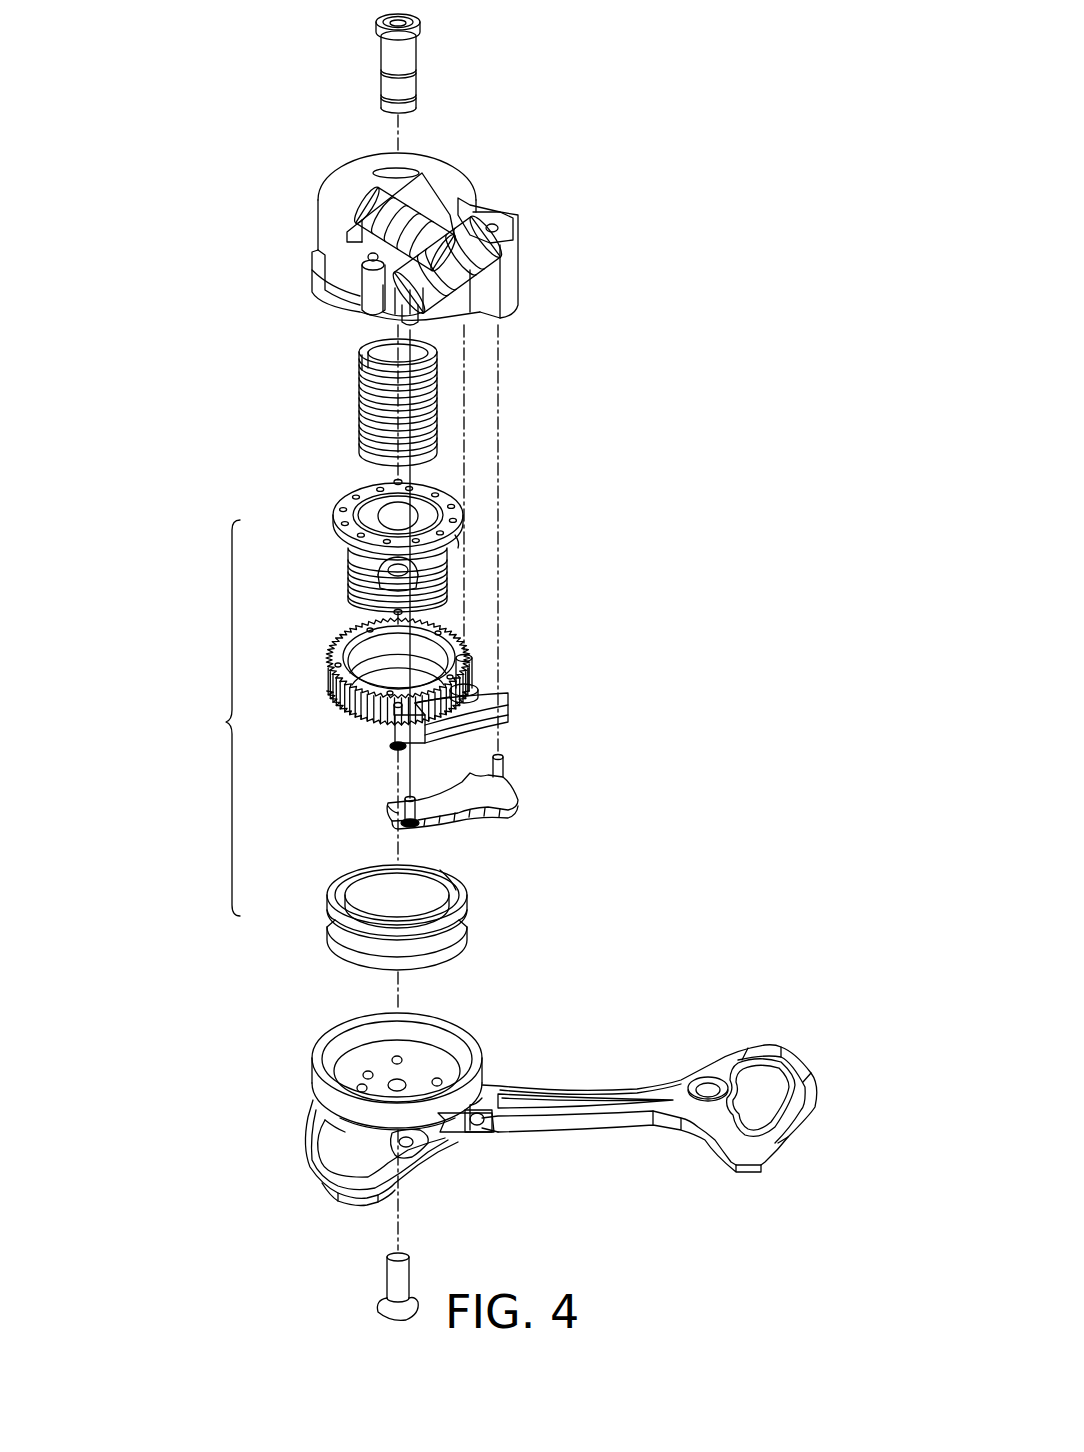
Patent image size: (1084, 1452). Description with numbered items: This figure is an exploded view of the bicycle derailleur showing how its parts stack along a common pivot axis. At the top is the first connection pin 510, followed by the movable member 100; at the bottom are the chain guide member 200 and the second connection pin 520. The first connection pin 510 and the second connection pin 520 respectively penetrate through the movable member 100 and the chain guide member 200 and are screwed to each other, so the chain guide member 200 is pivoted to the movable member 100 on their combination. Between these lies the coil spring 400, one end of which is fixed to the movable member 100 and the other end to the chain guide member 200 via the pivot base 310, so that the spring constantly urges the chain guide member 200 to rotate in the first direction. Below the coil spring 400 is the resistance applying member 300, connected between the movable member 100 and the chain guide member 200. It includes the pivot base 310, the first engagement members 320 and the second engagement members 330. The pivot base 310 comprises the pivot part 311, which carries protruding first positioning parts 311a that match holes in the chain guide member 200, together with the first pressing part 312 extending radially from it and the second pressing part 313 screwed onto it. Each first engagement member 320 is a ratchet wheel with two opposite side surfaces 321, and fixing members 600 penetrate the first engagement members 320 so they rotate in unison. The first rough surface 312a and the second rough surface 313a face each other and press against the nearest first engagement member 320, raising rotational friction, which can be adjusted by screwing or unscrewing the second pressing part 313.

The first connection pin 510 is at (408, 58).
The movable member 100 is at (514, 265).
The coil spring 400 is at (362, 392).
The first pressing part 312 is at (335, 540).
The first rough surface 312a is at (455, 541).
The pivot part 311 is at (345, 588).
The first positioning parts 311a is at (390, 612).
The resistance applying member 300 is at (522, 608).
The first engagement members 320 is at (346, 680).
The side surfaces 321 is at (425, 652).
The second engagement members 330 is at (510, 712).
The fixing members 600 is at (385, 727).
The second pressing part 313 is at (340, 903).
The second rough surface 313a is at (451, 882).
The pivot base 310 is at (211, 718).
The chain guide member 200 is at (597, 1135).
The second connection pin 520 is at (390, 1275).